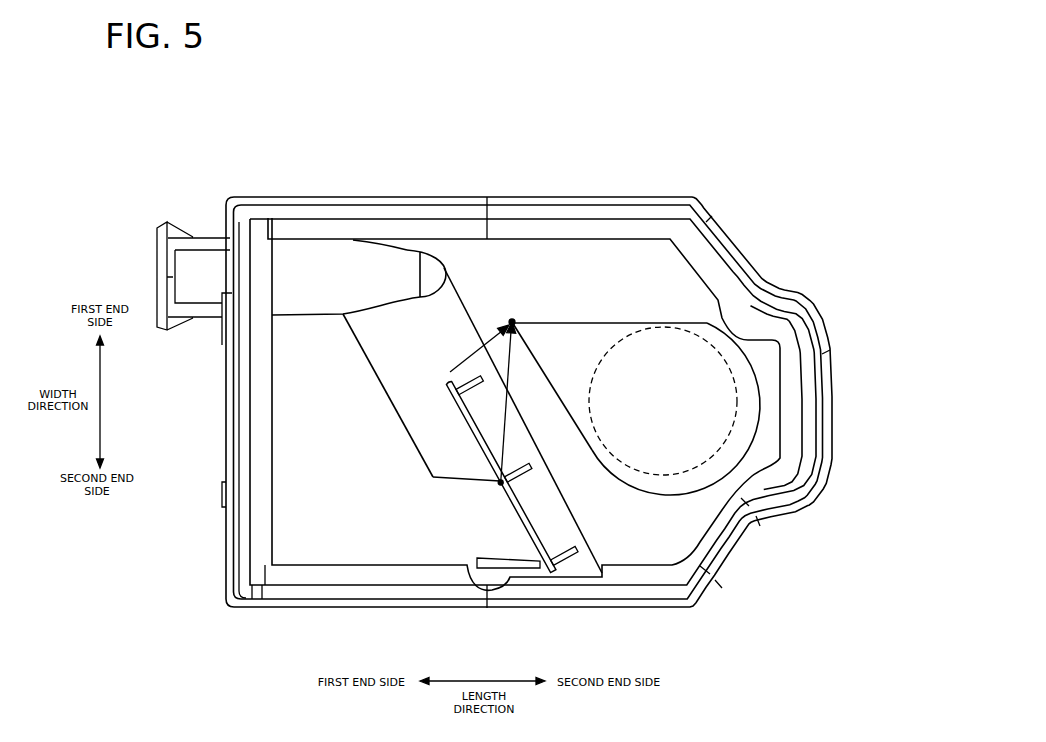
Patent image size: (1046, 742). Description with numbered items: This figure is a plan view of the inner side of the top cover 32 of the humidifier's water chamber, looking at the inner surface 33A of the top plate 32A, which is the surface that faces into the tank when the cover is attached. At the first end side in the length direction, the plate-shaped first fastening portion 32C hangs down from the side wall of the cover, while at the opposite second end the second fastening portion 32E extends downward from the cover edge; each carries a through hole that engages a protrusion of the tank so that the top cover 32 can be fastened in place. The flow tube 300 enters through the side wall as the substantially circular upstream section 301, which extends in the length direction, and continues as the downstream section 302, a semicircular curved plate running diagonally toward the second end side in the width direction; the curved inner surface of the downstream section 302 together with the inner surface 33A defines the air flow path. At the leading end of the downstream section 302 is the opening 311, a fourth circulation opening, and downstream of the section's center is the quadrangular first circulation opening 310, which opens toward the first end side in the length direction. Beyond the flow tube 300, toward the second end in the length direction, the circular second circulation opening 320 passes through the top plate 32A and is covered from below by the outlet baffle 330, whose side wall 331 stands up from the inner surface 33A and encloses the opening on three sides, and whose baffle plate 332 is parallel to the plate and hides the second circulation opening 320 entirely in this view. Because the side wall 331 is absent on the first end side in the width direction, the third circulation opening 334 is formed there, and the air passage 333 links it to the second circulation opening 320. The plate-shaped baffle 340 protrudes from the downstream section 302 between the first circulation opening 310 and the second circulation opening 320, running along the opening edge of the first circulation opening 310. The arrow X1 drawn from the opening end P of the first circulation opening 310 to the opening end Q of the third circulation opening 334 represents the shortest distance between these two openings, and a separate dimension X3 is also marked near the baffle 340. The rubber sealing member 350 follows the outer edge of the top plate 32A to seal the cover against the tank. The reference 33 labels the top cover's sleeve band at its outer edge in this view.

The top cover 32 is at (357, 191).
The top plate 32A is at (533, 369).
The first fastening portion 32C is at (224, 403).
The second fastening portion 32E is at (832, 385).
The cover 33 is at (717, 220).
The inner surface 33A is at (617, 250).
The flow tube 300 is at (341, 328).
The upstream section 301 is at (395, 243).
The downstream section 302 is at (390, 404).
The first circulation opening 310 is at (440, 480).
The opening 311 is at (474, 583).
The second circulation opening 320 is at (672, 474).
The outlet baffle 330 is at (655, 318).
The side wall 331 is at (752, 523).
The baffle plate 332 is at (592, 457).
The air passage 333 is at (594, 343).
The third circulation opening 334 is at (551, 324).
The baffle 340 is at (522, 532).
The sealing member 350 is at (712, 577).
The opening end P is at (494, 498).
The opening end Q is at (509, 306).
The arrow X1 is at (509, 420).
The distance X3 is at (457, 362).